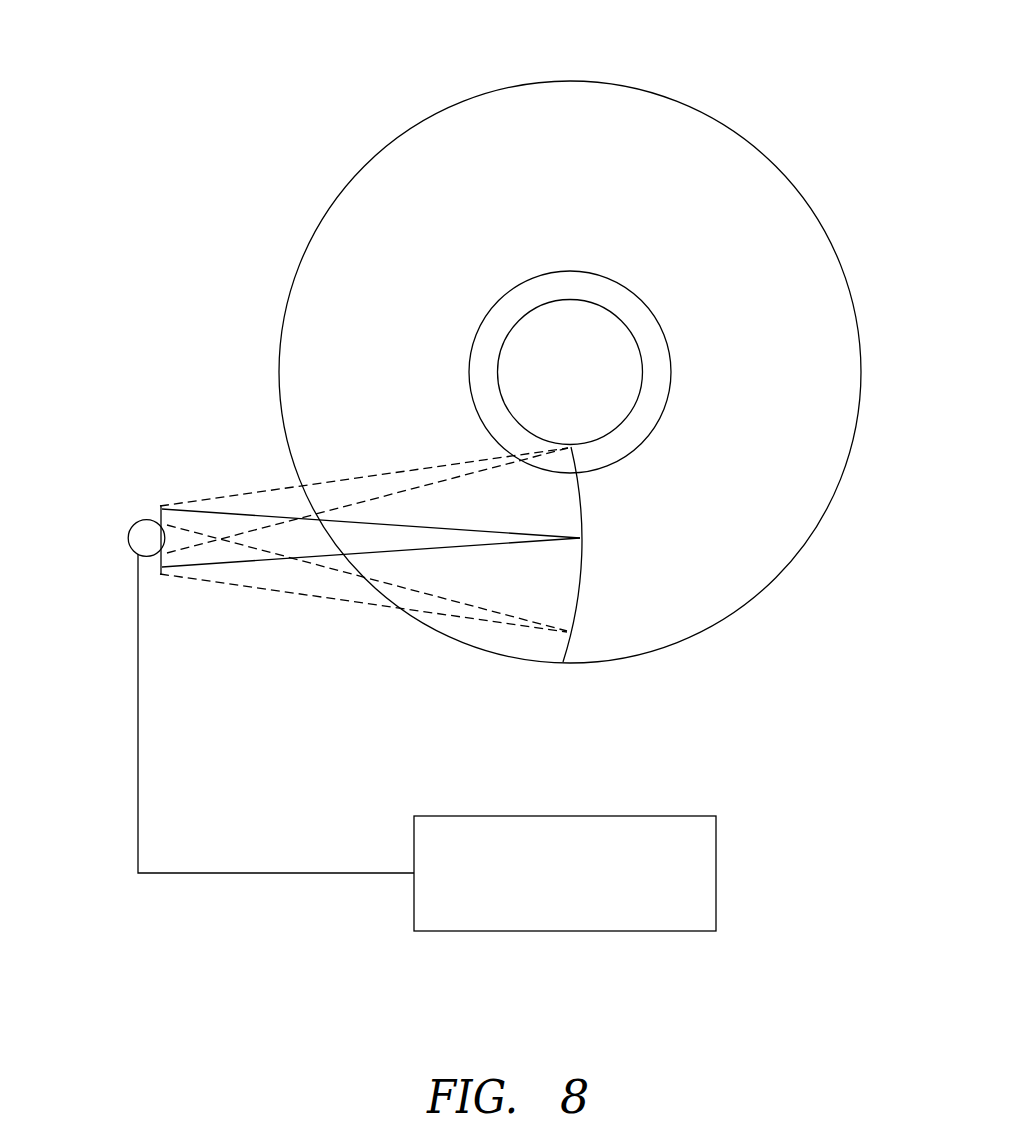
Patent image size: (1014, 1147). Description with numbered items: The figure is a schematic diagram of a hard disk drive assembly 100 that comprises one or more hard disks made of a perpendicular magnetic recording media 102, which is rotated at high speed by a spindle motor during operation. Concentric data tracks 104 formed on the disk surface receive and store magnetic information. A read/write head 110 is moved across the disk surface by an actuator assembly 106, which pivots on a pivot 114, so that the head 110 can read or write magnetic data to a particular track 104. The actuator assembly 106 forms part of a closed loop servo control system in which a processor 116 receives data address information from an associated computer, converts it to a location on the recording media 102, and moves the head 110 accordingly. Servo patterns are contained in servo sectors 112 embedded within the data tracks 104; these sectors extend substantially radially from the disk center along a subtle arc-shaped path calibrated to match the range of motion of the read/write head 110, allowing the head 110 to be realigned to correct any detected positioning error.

The hard disk drive assembly 100 is at (300, 64).
The perpendicular magnetic recording media 102 is at (592, 172).
The concentric data tracks 104 is at (673, 372).
The actuator assembly 106 is at (206, 493).
The read/write head 110 is at (507, 547).
The servo sectors 112 is at (583, 517).
The pivot 114 is at (128, 538).
The processor 116 is at (587, 887).